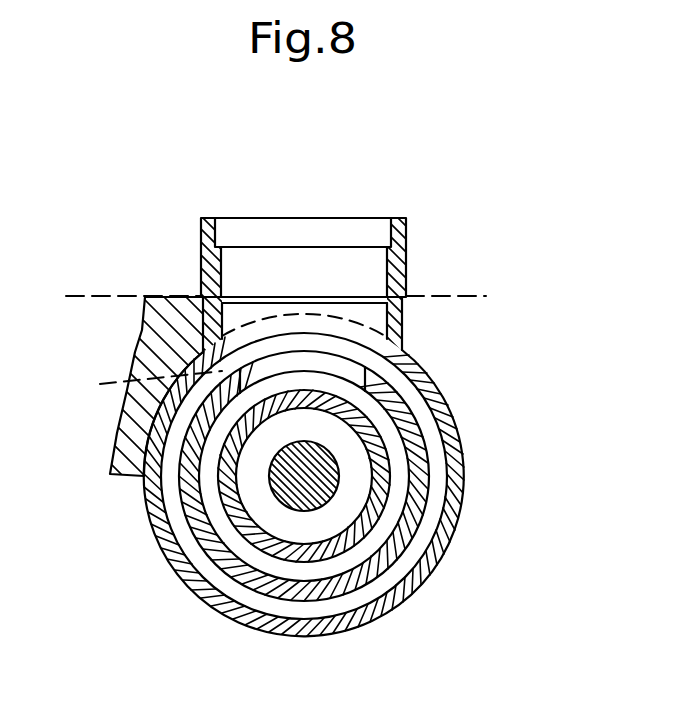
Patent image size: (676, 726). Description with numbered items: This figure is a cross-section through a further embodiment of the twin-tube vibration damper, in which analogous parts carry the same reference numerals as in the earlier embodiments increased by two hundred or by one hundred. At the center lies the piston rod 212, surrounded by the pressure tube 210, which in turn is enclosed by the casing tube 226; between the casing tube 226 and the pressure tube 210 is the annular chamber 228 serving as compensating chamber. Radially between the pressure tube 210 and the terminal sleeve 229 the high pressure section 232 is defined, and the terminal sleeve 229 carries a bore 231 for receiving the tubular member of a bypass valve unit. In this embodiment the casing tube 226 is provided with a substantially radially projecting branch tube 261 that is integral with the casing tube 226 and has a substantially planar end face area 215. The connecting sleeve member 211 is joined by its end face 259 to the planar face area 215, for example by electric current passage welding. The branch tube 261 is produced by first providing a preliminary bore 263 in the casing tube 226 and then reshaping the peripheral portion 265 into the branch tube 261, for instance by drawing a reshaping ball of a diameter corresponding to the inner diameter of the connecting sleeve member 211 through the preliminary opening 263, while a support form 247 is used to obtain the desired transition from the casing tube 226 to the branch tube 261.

The pressure tube 210 is at (385, 501).
The connecting sleeve member 211 is at (410, 262).
The piston rod 212 is at (320, 500).
The planar end face area 215 is at (115, 294).
The casing tube 226 is at (462, 477).
The annular chamber 228 is at (395, 588).
The terminal sleeve 229 is at (426, 432).
The bore 231 is at (366, 360).
The high pressure section 232 is at (232, 530).
The support form 247 is at (123, 449).
The end face 259 is at (247, 304).
The branch tube 261 is at (403, 316).
The preliminary bore 263 is at (287, 318).
The peripheral portion 265 is at (356, 335).